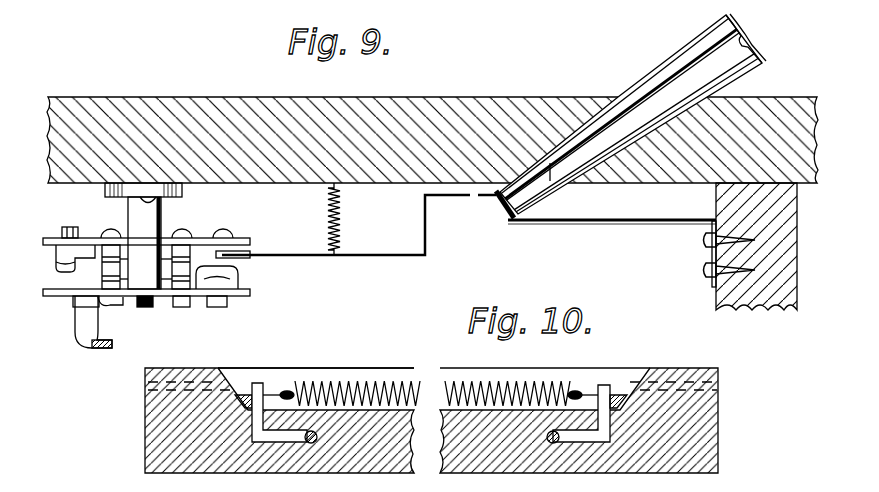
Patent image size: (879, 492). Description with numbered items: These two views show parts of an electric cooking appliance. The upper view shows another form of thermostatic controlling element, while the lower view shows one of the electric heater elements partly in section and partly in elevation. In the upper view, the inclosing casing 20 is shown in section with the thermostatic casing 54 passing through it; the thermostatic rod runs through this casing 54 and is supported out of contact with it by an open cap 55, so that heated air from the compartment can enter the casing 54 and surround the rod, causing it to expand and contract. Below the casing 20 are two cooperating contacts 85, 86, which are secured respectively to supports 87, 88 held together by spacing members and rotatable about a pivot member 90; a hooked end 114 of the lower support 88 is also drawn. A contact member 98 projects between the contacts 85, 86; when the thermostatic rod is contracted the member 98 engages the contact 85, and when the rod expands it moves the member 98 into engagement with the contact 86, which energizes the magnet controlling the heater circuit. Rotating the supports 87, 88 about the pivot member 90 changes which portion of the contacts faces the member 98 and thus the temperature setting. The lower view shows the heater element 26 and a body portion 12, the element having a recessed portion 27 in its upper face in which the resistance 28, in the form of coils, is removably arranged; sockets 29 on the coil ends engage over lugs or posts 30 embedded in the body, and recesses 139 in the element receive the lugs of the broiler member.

In FIG. 9, the inclosing casing 20 is at (449, 98).
In FIG. 9, the casing 54 is at (703, 36).
In FIG. 9, the open cap 55 is at (744, 44).
In FIG. 9, the contact member 98 is at (430, 218).
In FIG. 9, the pivot member 90 is at (153, 222).
In FIG. 9, the support 87 is at (56, 238).
In FIG. 9, the contact 85 is at (60, 267).
In FIG. 9, the contact 86 is at (240, 276).
In FIG. 9, the support 88 is at (57, 297).
In FIG. 9, the hook end 114 is at (90, 328).
In FIG. 10, the block 12 is at (279, 430).
In FIG. 10, the recessed portion 27 is at (279, 374).
In FIG. 10, the recesses 139 is at (191, 366).
In FIG. 10, the sockets 29 is at (241, 393).
In FIG. 10, the lugs or posts 30 is at (259, 381).
In FIG. 10, the resistance 28 is at (383, 385).
In FIG. 10, the electric heater element 26 is at (720, 412).